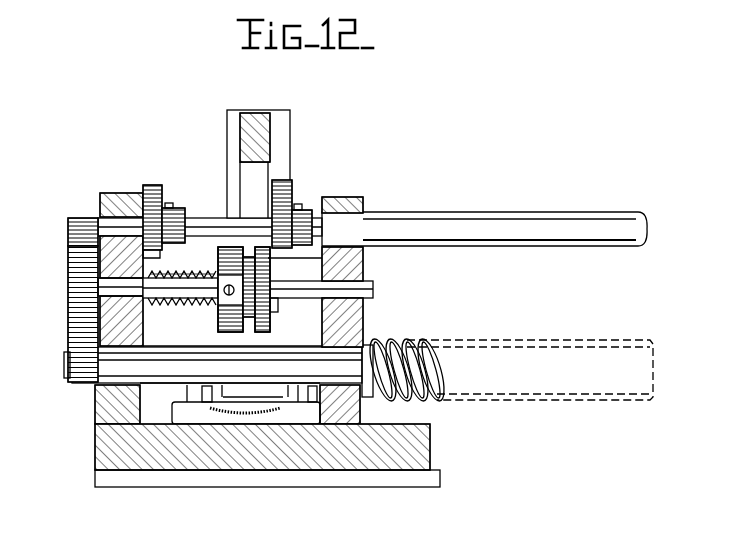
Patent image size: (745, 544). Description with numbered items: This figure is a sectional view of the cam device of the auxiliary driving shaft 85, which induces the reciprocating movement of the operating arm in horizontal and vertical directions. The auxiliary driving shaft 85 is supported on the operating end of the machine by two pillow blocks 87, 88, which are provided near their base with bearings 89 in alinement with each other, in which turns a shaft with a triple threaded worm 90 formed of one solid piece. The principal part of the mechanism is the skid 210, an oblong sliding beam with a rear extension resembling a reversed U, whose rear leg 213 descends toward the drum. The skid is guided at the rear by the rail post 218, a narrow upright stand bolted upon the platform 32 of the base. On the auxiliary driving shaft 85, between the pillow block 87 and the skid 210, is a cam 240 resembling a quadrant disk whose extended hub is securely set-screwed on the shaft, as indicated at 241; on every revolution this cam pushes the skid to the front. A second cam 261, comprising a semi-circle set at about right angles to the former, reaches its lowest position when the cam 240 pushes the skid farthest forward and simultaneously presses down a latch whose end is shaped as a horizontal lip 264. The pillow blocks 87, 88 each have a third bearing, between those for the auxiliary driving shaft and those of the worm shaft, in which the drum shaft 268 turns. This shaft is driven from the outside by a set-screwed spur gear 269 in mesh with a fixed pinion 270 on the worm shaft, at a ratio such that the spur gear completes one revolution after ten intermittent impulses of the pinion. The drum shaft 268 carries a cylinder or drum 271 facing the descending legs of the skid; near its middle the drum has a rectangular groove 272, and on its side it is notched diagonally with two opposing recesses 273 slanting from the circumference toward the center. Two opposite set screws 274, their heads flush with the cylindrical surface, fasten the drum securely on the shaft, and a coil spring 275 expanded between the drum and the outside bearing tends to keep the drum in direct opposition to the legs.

The platform 32 is at (256, 460).
The auxiliary driving shaft 85 is at (410, 222).
The pillow block 87 is at (341, 205).
The pillow block 88 is at (121, 198).
The bearings 89 is at (110, 390).
The triple threaded worm 90 is at (423, 360).
The skid 210 is at (259, 114).
The rear leg 213 is at (215, 310).
The rail post 218 is at (279, 135).
The cam 240 is at (284, 188).
The set-screw 241 is at (300, 206).
The cam 261 is at (153, 189).
The horizontal lip 264 is at (98, 256).
The drum shaft 268 is at (376, 290).
The spur gear 269 is at (73, 262).
The pinion 270 is at (68, 378).
The drum 271 is at (363, 259).
The rectangular groove 272 is at (248, 322).
The recesses 273 is at (274, 320).
The set screws 274 is at (232, 270).
The coil spring 275 is at (198, 266).